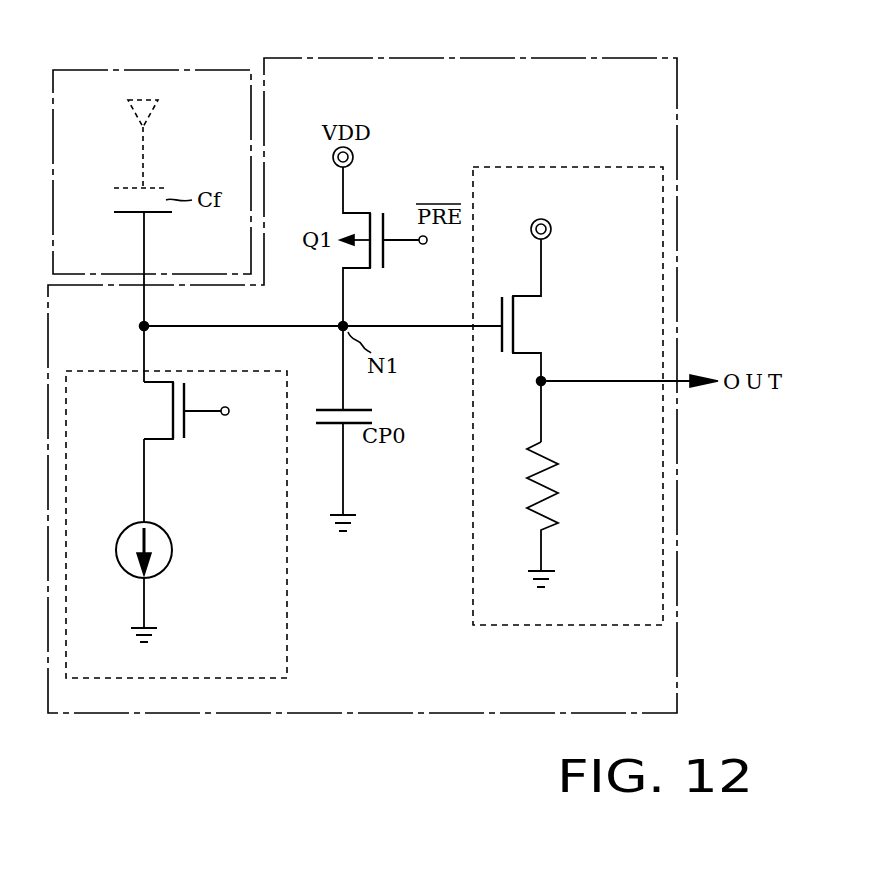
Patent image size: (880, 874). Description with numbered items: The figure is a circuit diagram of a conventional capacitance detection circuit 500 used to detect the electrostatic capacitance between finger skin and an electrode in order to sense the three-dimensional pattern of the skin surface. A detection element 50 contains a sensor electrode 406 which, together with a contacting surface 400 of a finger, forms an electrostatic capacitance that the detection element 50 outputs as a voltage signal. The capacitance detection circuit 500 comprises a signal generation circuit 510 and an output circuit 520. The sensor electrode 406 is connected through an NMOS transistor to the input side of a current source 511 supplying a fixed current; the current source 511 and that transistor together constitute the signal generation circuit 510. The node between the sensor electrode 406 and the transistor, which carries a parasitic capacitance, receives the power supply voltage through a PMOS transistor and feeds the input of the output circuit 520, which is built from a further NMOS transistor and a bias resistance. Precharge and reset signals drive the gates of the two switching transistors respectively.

The detection element 50 is at (146, 70).
The surface of a finger 400 is at (156, 188).
The sensor electrode 406 is at (158, 215).
The capacitance detection circuit 500 is at (565, 58).
The signal generation circuit 510 is at (228, 524).
The current source 511 is at (163, 570).
The output circuit 520 is at (562, 167).